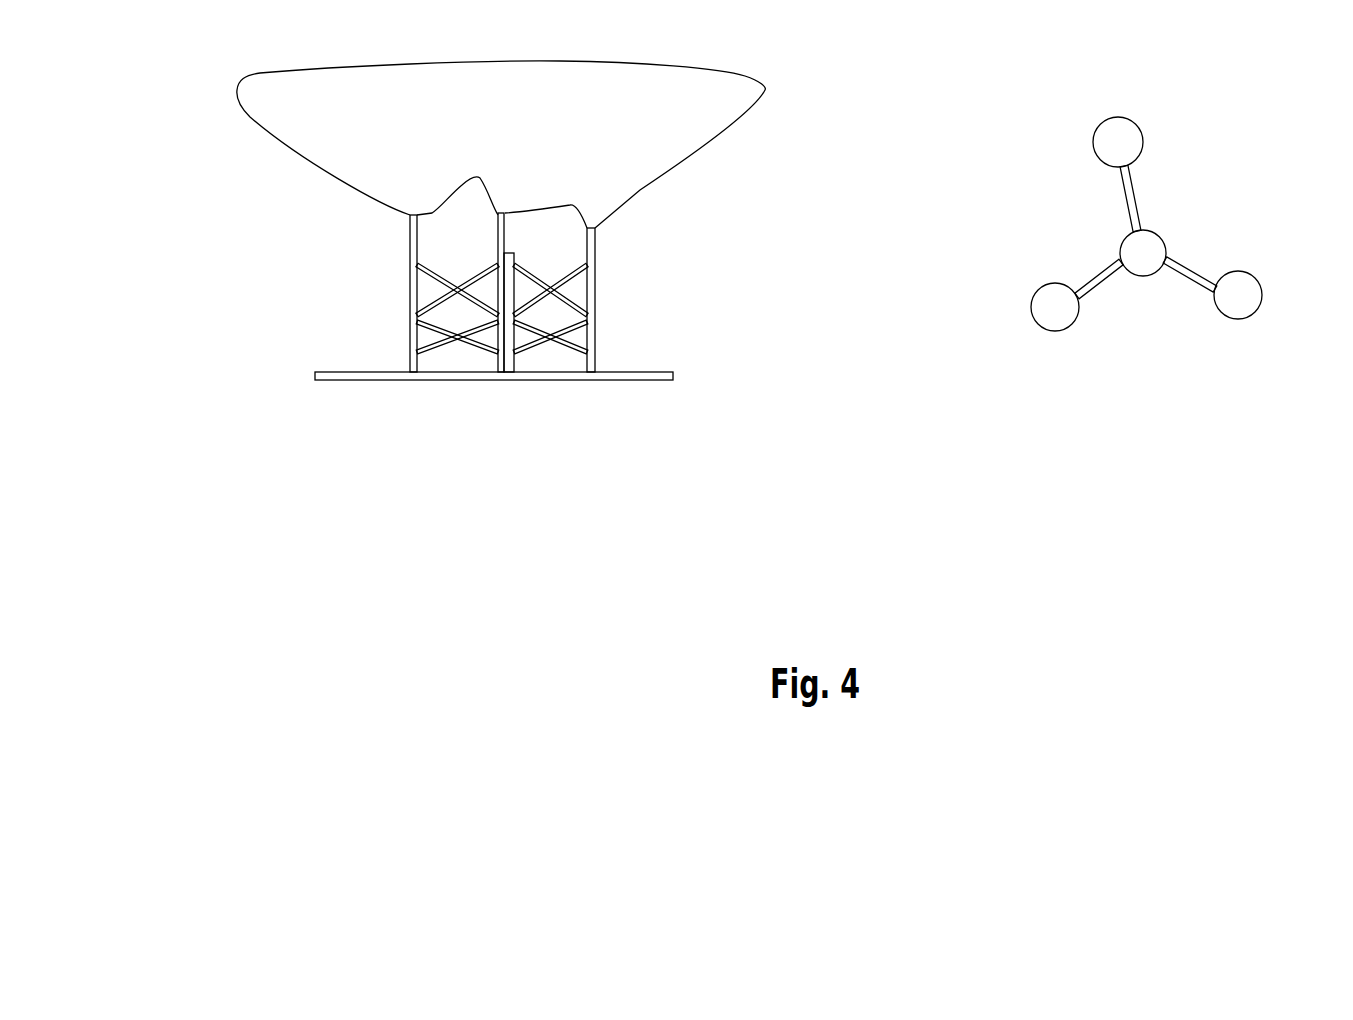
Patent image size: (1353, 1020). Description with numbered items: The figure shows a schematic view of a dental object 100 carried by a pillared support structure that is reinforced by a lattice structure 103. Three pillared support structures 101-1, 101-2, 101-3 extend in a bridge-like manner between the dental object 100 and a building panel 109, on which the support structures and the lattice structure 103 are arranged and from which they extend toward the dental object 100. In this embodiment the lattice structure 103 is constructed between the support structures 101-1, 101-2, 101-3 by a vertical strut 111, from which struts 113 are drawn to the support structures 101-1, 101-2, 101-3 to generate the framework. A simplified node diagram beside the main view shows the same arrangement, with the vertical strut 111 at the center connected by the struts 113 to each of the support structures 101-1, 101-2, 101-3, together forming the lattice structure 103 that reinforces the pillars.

The dental object 100 is at (602, 137).
The support structure 101-1 is at (500, 245).
The support structure 101-2 is at (408, 368).
The support structure 101-3 is at (597, 313).
The lattice structure 103 is at (592, 287).
The building panel 109 is at (626, 378).
The vertical strut 111 is at (508, 330).
The strut 113 is at (435, 308).